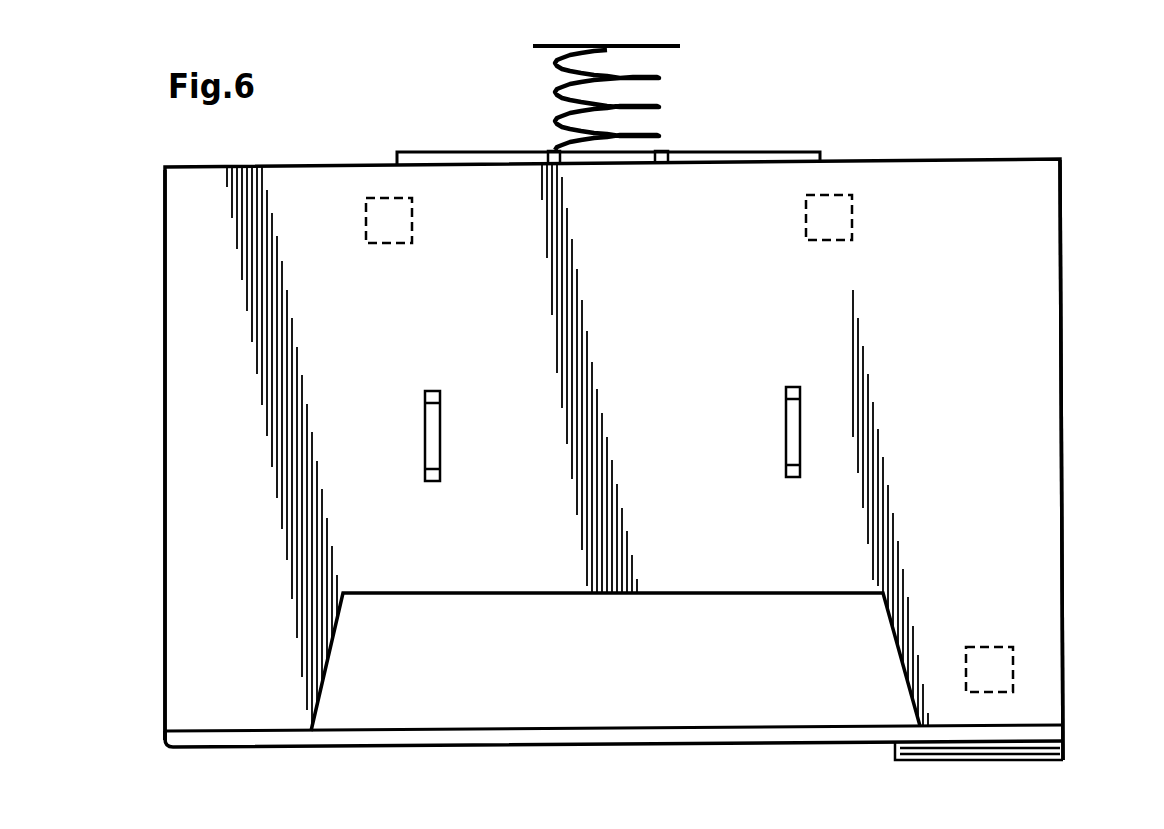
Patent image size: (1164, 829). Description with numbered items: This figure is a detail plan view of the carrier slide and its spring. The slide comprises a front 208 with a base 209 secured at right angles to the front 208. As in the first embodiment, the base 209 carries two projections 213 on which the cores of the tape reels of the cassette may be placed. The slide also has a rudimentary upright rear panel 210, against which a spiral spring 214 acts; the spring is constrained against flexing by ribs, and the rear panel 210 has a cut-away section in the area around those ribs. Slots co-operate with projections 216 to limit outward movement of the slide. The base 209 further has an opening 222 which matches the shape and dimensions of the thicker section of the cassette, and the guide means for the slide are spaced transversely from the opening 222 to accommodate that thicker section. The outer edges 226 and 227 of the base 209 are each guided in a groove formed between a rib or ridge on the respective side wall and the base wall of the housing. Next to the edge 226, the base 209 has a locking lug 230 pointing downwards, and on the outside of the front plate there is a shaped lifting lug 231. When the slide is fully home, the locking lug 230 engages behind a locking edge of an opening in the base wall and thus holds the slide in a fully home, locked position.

The front 208 is at (438, 746).
The base 209 is at (614, 459).
The rear panel 210 is at (791, 157).
The projections 213 is at (433, 436).
The spiral spring 214 is at (658, 98).
The projections 216 is at (413, 219).
The opening 222 is at (538, 595).
The outer edge 226 is at (1064, 455).
The outer edge 227 is at (165, 470).
The locking lug 230 is at (987, 650).
The lifting lug 231 is at (1065, 752).